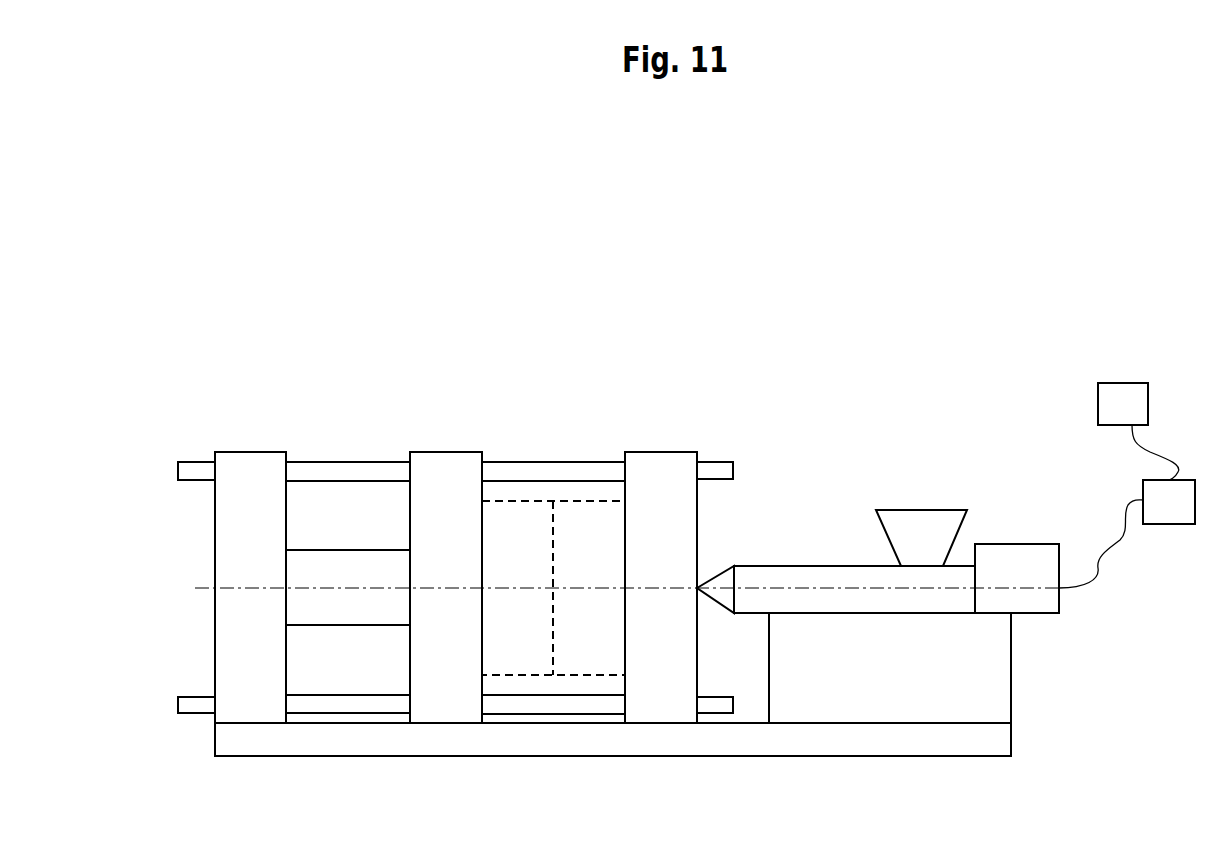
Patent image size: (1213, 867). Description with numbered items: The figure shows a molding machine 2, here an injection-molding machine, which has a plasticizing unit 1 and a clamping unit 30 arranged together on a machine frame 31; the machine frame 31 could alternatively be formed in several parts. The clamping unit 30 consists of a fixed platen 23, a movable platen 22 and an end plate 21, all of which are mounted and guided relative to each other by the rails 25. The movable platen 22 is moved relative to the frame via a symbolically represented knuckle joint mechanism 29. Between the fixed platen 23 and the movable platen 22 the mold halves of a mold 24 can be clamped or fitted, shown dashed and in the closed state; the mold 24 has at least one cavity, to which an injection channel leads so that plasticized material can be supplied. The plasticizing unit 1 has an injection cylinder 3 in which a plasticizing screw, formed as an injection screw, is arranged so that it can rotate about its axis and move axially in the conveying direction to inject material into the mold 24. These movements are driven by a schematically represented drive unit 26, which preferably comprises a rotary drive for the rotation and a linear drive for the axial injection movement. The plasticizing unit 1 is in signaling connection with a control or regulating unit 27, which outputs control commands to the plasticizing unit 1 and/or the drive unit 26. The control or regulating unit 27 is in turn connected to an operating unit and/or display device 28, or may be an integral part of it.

The plasticizing unit 1 is at (796, 301).
The molding machine 2 is at (328, 201).
The injection cylinder 3 is at (800, 570).
The end plate 21 is at (246, 468).
The movable platen 22 is at (438, 472).
The fixed platen 23 is at (665, 473).
The mold 24 is at (490, 430).
The rails 25 is at (717, 468).
The drive unit 26 is at (1010, 563).
The control or regulating unit 27 is at (1172, 512).
The operating unit and/or display device 28 is at (1117, 393).
The knuckle joint mechanism 29 is at (322, 570).
The clamping unit 30 is at (554, 301).
The machine frame 31 is at (590, 737).